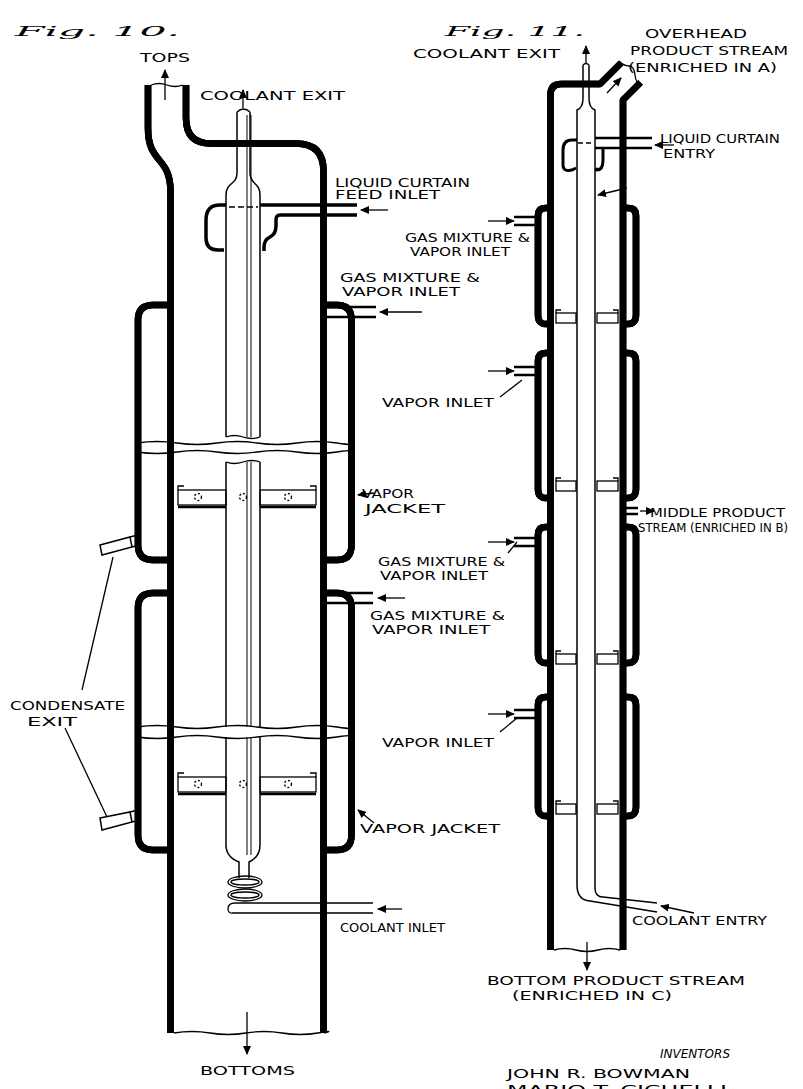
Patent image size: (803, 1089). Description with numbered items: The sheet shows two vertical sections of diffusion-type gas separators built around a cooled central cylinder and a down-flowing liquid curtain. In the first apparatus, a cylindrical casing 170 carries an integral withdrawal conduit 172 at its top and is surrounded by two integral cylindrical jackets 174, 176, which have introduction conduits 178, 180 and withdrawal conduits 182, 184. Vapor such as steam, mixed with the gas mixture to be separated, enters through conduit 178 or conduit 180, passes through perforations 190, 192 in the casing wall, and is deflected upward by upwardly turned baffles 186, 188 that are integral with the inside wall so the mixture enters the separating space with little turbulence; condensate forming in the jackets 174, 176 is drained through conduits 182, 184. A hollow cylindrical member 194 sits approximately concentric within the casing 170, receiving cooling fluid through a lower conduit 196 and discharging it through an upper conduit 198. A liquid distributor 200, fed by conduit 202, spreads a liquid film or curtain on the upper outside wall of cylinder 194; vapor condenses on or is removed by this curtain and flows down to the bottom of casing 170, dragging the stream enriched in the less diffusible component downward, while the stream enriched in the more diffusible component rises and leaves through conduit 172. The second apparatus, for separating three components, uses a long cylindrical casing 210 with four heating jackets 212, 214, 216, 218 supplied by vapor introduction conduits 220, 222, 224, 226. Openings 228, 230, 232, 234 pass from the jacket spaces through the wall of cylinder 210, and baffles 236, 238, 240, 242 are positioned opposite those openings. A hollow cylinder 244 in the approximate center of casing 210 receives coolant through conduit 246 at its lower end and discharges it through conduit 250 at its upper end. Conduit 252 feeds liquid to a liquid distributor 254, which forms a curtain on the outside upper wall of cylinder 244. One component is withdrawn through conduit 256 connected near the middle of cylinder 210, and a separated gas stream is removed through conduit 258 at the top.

In FIG. 10, the cylindrical casing 170 is at (166, 250).
In FIG. 10, the withdrawal conduit 172 is at (145, 92).
In FIG. 10, the cylindrical jacket 174 is at (356, 452).
In FIG. 10, the cylindrical jacket 176 is at (357, 762).
In FIG. 10, the introduction conduit 178 is at (375, 319).
In FIG. 10, the introduction conduit 180 is at (350, 592).
In FIG. 10, the withdrawal conduit 182 is at (115, 543).
In FIG. 10, the withdrawal conduit 184 is at (128, 812).
In FIG. 10, the upwardly turned baffle 186 is at (190, 488).
In FIG. 10, the upwardly turned baffle 188 is at (186, 780).
In FIG. 10, the perforations 190 is at (322, 497).
In FIG. 10, the perforations 192 is at (327, 787).
In FIG. 10, the hollow cylindrical member 194 is at (261, 262).
In FIG. 10, the conduit 196 is at (343, 904).
In FIG. 10, the conduit 198 is at (252, 122).
In FIG. 10, the liquid distributor 200 is at (209, 212).
In FIG. 10, the conduit 202 is at (334, 218).
In FIG. 11, the cylindrical casing 210 is at (627, 338).
In FIG. 11, the heating jacket 212 is at (643, 259).
In FIG. 11, the heating jacket 214 is at (640, 410).
In FIG. 11, the heating jacket 216 is at (641, 583).
In FIG. 11, the heating jacket 218 is at (641, 760).
In FIG. 11, the vapor introduction conduit 220 is at (522, 216).
In FIG. 11, the vapor introduction conduit 222 is at (519, 359).
In FIG. 11, the vapor introduction conduit 224 is at (516, 538).
In FIG. 11, the vapor introduction conduit 226 is at (520, 701).
In FIG. 11, the opening 228 is at (540, 320).
In FIG. 11, the opening 230 is at (541, 484).
In FIG. 11, the opening 232 is at (540, 662).
In FIG. 11, the opening 234 is at (540, 813).
In FIG. 11, the baffle 236 is at (605, 312).
In FIG. 11, the baffle 238 is at (610, 480).
In FIG. 11, the baffle 240 is at (608, 653).
In FIG. 11, the baffle 242 is at (610, 804).
In FIG. 11, the hollow cylinder 244 is at (588, 240).
In FIG. 11, the conduit 246 is at (645, 903).
In FIG. 11, the conduit 250 is at (581, 76).
In FIG. 11, the conduit 252 is at (646, 137).
In FIG. 11, the liquid distributor 254 is at (562, 150).
In FIG. 11, the conduit 256 is at (638, 508).
In FIG. 11, the conduit 258 is at (636, 77).